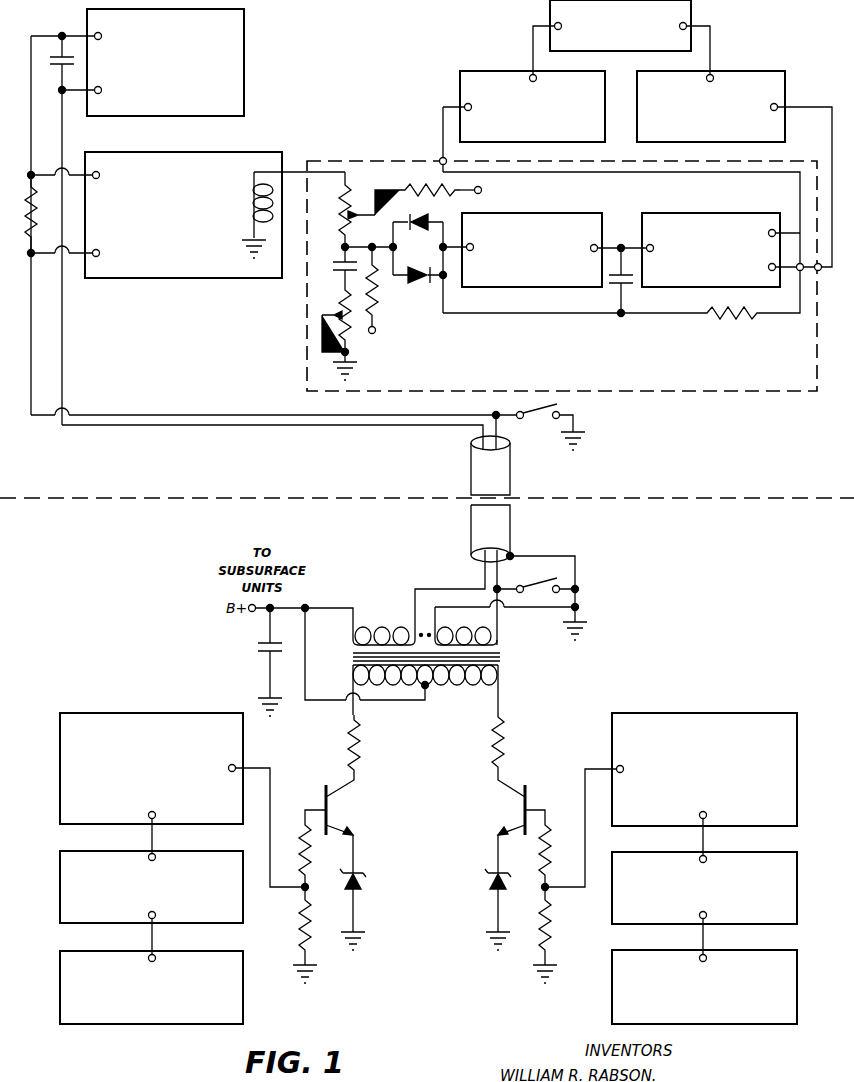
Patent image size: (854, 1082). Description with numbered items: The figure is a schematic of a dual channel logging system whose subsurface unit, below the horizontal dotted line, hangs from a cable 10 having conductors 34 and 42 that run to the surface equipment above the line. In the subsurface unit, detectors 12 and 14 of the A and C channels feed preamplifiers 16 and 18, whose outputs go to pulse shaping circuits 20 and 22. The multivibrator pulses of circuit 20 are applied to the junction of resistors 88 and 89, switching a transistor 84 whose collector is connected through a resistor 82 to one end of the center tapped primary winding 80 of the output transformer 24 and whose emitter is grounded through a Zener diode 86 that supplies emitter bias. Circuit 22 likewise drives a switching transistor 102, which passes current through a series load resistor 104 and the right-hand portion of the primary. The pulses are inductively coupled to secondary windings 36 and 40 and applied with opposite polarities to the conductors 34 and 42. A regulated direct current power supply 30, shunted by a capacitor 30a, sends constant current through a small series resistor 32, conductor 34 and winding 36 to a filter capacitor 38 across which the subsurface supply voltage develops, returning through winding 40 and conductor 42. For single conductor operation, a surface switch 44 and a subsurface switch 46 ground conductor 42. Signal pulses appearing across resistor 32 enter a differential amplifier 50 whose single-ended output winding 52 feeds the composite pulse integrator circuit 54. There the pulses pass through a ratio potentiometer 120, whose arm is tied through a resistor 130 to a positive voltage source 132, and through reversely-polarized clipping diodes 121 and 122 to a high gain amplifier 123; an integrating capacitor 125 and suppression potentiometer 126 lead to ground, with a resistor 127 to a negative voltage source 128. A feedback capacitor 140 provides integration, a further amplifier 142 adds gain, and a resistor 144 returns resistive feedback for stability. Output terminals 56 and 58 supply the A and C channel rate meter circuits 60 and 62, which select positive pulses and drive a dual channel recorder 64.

The cable 10 is at (515, 478).
The detector 12 is at (110, 1025).
The detector 14 is at (797, 988).
The preamplifier 16 is at (60, 877).
The preamplifier 18 is at (797, 898).
The pulse shaping circuit 20 is at (165, 692).
The pulse shaping circuit 22 is at (712, 712).
The output transformer 24 is at (505, 655).
The direct current power supply 30 is at (250, 46).
The capacitor 30a is at (56, 55).
The series resistor 32 is at (38, 195).
The conductor 34 is at (483, 432).
The winding 36 is at (385, 627).
The filter capacitor 38 is at (263, 650).
The secondary winding 40 is at (484, 642).
The conductor 42 is at (502, 425).
The switch 44 is at (560, 408).
The switch 46 is at (560, 585).
The differential amplifier 50 is at (150, 280).
The winding 52 is at (253, 190).
The composite pulse integrator circuit 54 is at (740, 393).
The first output terminal 56 is at (443, 158).
The second output terminal 58 is at (819, 270).
The A channel rate meter circuit 60 is at (490, 70).
The C channel rate meter circuit 62 is at (750, 70).
The dual channel recorder 64 is at (693, 14).
The center tapped primary winding 80 is at (383, 661).
The resistor 82 is at (361, 746).
The switching transistor 84 is at (366, 820).
The Zener diode 86 is at (363, 883).
The resistor 88 is at (300, 840).
The resistor 89 is at (285, 939).
The switching transistor 102 is at (502, 816).
The series load resistor 104 is at (492, 740).
The potentiometer 120 is at (346, 205).
The clipping diode 121 is at (418, 263).
The clipping diode 122 is at (420, 288).
The high gain amplifier 123 is at (576, 213).
The integrating capacitor 125 is at (333, 268).
The suppression potentiometer 126 is at (335, 315).
The resistor 127 is at (380, 308).
The regulated negative voltage source 128 is at (378, 333).
The resistor 130 is at (418, 188).
The regulated positive voltage source 132 is at (485, 195).
The feedback capacitor 140 is at (612, 285).
The amplifier 142 is at (678, 213).
The resistor 144 is at (705, 310).